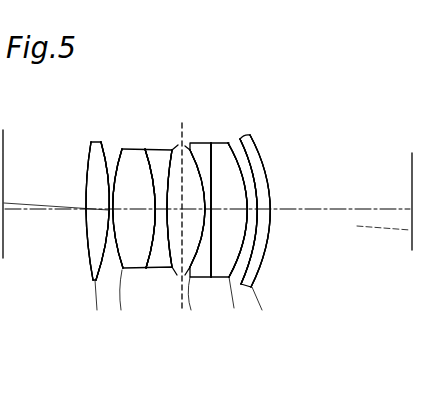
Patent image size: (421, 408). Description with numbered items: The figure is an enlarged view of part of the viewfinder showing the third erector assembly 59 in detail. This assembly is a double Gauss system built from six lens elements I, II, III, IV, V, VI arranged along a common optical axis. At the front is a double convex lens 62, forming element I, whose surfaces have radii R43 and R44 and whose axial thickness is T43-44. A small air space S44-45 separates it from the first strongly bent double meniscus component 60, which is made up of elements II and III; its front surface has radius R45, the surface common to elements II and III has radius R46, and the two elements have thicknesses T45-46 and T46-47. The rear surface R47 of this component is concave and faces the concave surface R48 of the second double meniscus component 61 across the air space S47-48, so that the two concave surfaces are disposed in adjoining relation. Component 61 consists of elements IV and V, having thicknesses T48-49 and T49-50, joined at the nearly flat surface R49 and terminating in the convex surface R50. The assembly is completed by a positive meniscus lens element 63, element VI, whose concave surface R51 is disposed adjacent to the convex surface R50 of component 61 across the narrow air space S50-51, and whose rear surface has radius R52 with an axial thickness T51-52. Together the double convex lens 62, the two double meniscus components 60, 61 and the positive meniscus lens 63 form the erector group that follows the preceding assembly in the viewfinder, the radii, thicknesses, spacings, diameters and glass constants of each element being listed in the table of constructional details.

The third erector assembly 59 is at (281, 77).
The first double meniscus component 60 is at (143, 212).
The second double meniscus component 61 is at (255, 211).
The double convex lens 62 is at (63, 213).
The positive meniscus lens element 63 is at (295, 218).
The front surface radius of lens I R43 is at (89, 146).
The rear surface radius of lens I R44 is at (100, 141).
The front surface radius of lens II R45 is at (118, 149).
The cemented surface radius between lenses II and III R46 is at (147, 149).
The concave rear surface of component 60 R47 is at (173, 150).
The concave front surface of component 61 R48 is at (186, 147).
The cemented surface radius between lenses IV and V R49 is at (212, 145).
The convex rear surface of component 61 R50 is at (229, 142).
The concave front surface of lens 63 R51 is at (241, 139).
The rear surface radius of lens VI R52 is at (258, 152).
The air space between lenses I and II S44-45 is at (111, 207).
The thickness of lens I T43-44 is at (100, 208).
The thickness of lens II T45-46 is at (133, 207).
The thickness of lens III T46-47 is at (163, 211).
The air space between components 60 and 61 S47-48 is at (183, 214).
The thickness of lens IV T48-49 is at (207, 213).
The thickness of lens V T49-50 is at (225, 213).
The air space between component 61 and lens VI S50-51 is at (249, 206).
The thickness of lens VI T51-52 is at (262, 214).
The first lens element I is at (67, 227).
The second lens element II is at (134, 243).
The third lens element III is at (125, 279).
The fourth lens element IV is at (203, 240).
The fifth lens element V is at (229, 240).
The sixth lens element VI is at (258, 270).